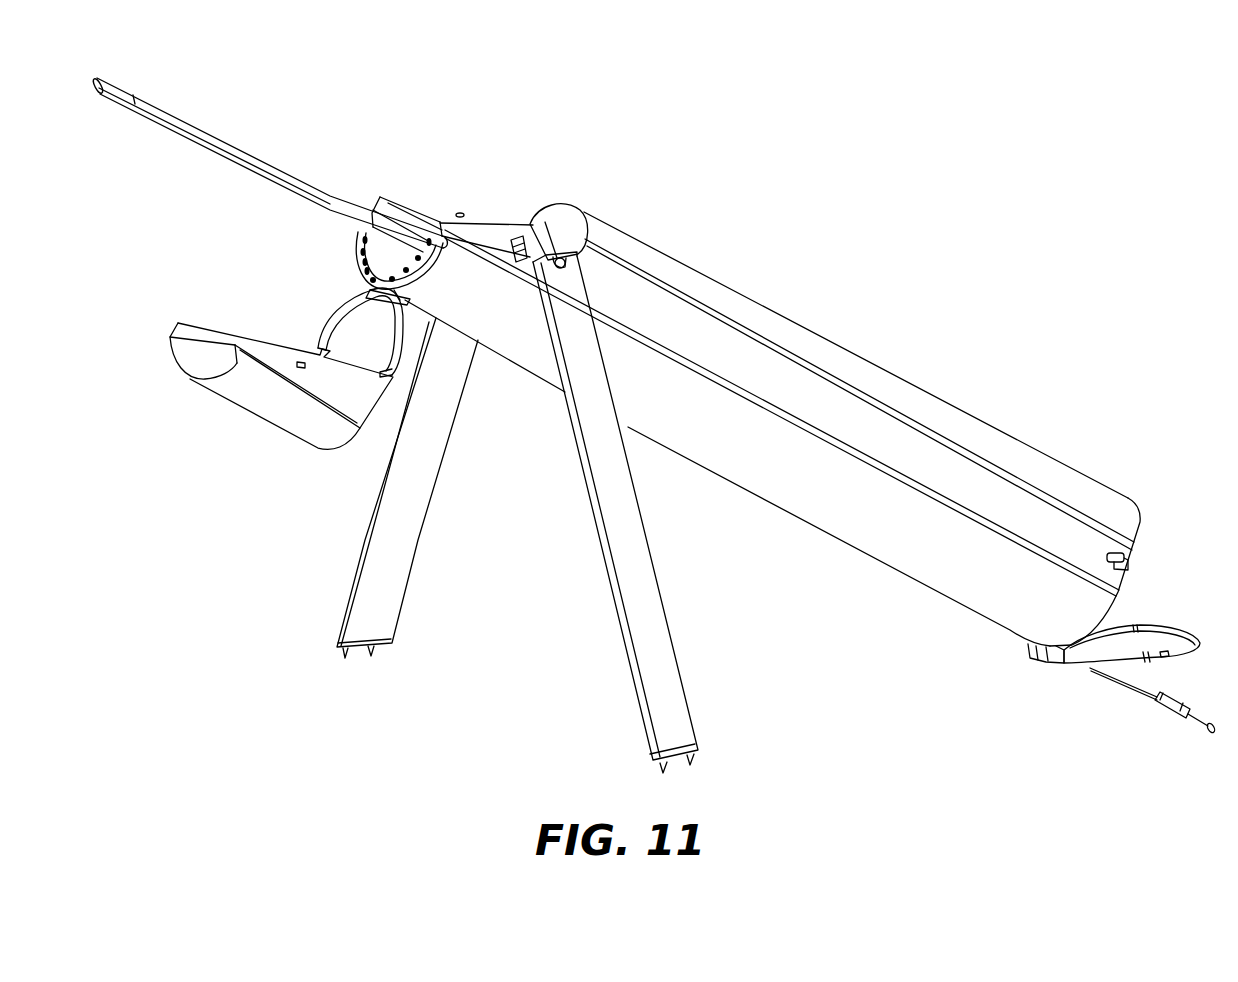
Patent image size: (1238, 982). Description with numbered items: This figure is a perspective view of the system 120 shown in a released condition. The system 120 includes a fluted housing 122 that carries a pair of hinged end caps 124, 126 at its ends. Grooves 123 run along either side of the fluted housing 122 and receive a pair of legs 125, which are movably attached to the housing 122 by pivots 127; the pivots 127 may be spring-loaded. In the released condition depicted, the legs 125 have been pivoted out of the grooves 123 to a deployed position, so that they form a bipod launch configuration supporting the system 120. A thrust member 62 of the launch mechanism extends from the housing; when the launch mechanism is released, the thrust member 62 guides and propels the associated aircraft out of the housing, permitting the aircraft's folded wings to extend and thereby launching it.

The thrust member 62 is at (279, 167).
The system 120 is at (741, 203).
The fluted housing 122 is at (801, 314).
The grooves 123 is at (933, 446).
The hinged end cap 124 is at (270, 423).
The legs 125 is at (420, 547).
The hinged end cap 126 is at (1200, 637).
The pivots 127 is at (548, 205).